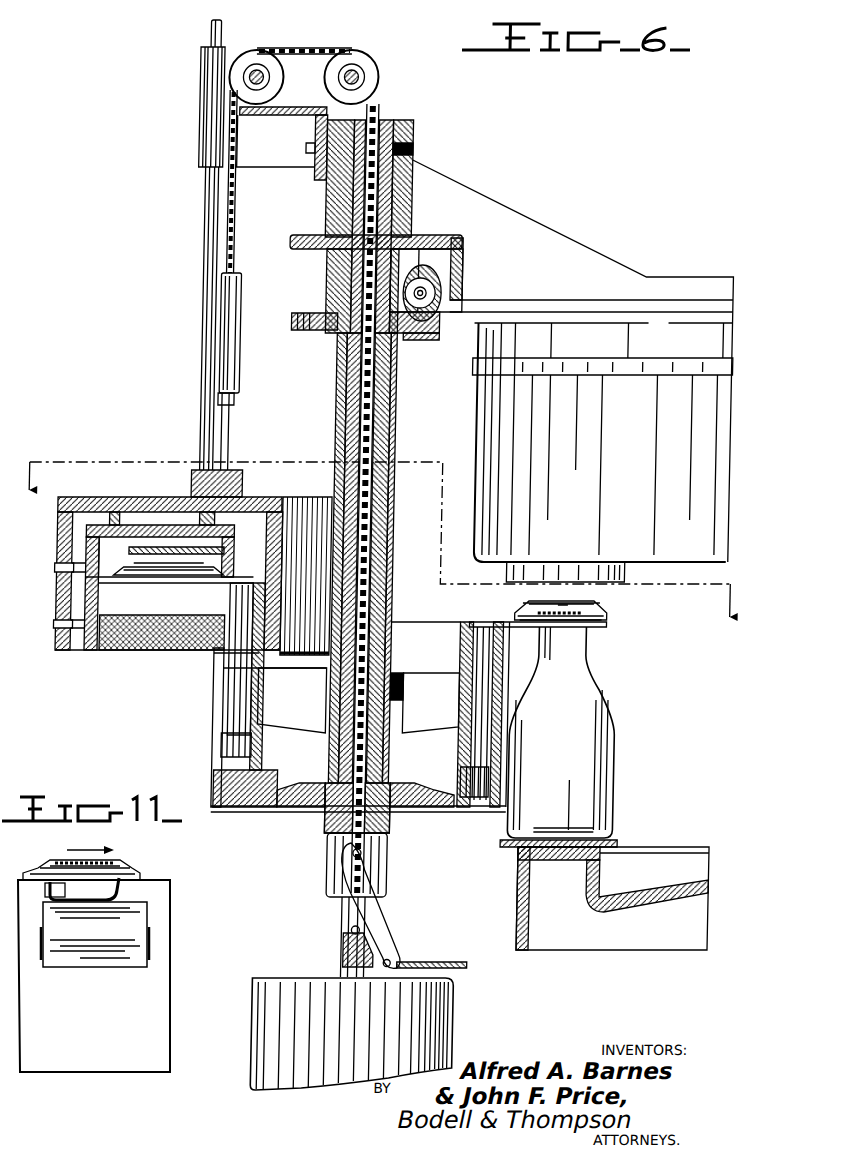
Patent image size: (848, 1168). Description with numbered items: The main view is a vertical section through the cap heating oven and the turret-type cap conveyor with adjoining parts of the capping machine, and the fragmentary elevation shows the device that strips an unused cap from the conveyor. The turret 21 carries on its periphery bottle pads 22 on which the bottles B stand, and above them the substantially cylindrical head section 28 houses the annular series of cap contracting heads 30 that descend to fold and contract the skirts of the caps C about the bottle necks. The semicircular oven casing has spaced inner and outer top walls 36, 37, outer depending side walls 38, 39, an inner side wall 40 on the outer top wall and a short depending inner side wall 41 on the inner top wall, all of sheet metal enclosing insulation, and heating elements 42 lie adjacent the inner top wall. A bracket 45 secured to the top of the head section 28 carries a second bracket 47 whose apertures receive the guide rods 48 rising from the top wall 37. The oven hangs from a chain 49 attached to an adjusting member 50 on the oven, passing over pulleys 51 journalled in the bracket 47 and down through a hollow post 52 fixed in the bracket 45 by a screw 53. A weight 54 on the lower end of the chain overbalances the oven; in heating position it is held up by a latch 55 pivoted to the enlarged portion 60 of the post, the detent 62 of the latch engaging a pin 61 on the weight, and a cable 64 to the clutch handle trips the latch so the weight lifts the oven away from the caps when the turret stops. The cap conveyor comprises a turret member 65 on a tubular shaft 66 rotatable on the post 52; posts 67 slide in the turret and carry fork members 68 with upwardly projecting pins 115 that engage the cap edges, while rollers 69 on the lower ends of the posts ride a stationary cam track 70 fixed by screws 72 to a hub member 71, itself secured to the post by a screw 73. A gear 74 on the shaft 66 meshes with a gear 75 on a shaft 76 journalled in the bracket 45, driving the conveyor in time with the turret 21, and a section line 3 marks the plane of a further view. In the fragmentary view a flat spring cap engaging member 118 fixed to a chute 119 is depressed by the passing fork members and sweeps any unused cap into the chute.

In FIG. 6, the section line 3- 3 is at (376, 558).
In FIG. 6, the turret 21 is at (618, 948).
In FIG. 6, the bottle pads 22 is at (622, 842).
In FIG. 6, the head section 28 is at (478, 430).
In FIG. 6, the cap contracting heads 30 is at (628, 575).
In FIG. 6, the inner top wall 36 is at (140, 538).
In FIG. 6, the outer top wall 37 is at (145, 492).
In FIG. 6, the outer depending side wall 38 is at (100, 596).
In FIG. 6, the outer depending side wall 39 is at (58, 596).
In FIG. 6, the inner side wall 40 is at (290, 648).
In FIG. 6, the short depending inner side wall 41 is at (228, 585).
In FIG. 6, the heating elements 42 is at (130, 552).
In FIG. 6, the bracket 45 is at (510, 361).
In FIG. 6, the second bracket 47 is at (302, 168).
In FIG. 6, the guide rods 48 is at (200, 228).
In FIG. 6, the chain 49 is at (232, 194).
In FIG. 6, the adjusting member 50 is at (237, 335).
In FIG. 6, the pulleys 51 is at (254, 60).
In FIG. 6, the hollow post 52 is at (340, 262).
In FIG. 6, the screw 53 is at (408, 154).
In FIG. 6, the weight 54 is at (262, 1003).
In FIG. 6, the latch 55 is at (390, 920).
In FIG. 6, the enlarged portion 60 is at (394, 858).
In FIG. 6, the pin 61 is at (358, 931).
In FIG. 6, the detent 62 is at (352, 946).
In FIG. 6, the cable 64 is at (445, 961).
In FIG. 6, the turret member 65 is at (408, 676).
In FIG. 6, the tubular shaft 66 is at (394, 566).
In FIG. 6, the posts 67 is at (224, 688).
In FIG. 6, the rollers 69 is at (256, 744).
In FIG. 6, the cam track 70 is at (222, 784).
In FIG. 6, the hub member 71 is at (330, 823).
In FIG. 6, the screws 72 is at (300, 818).
In FIG. 6, the screw 73 is at (398, 818).
In FIG. 6, the gear 74 is at (414, 338).
In FIG. 6, the gear 75 is at (455, 273).
In FIG. 6, the shaft 76 is at (408, 286).
In FIG. 6, the pins 115 is at (611, 619).
In FIG. 11, the cap engaging member 118 is at (118, 895).
In FIG. 11, the chute 119 is at (94, 976).
In FIG. 6, the bottles B is at (618, 745).
In FIG. 6, the caps C is at (616, 602).
In FIG. 11, the caps C is at (122, 866).
In FIG. 6, the fork members 68 is at (160, 580).
In FIG. 11, the fork members 68 is at (140, 875).